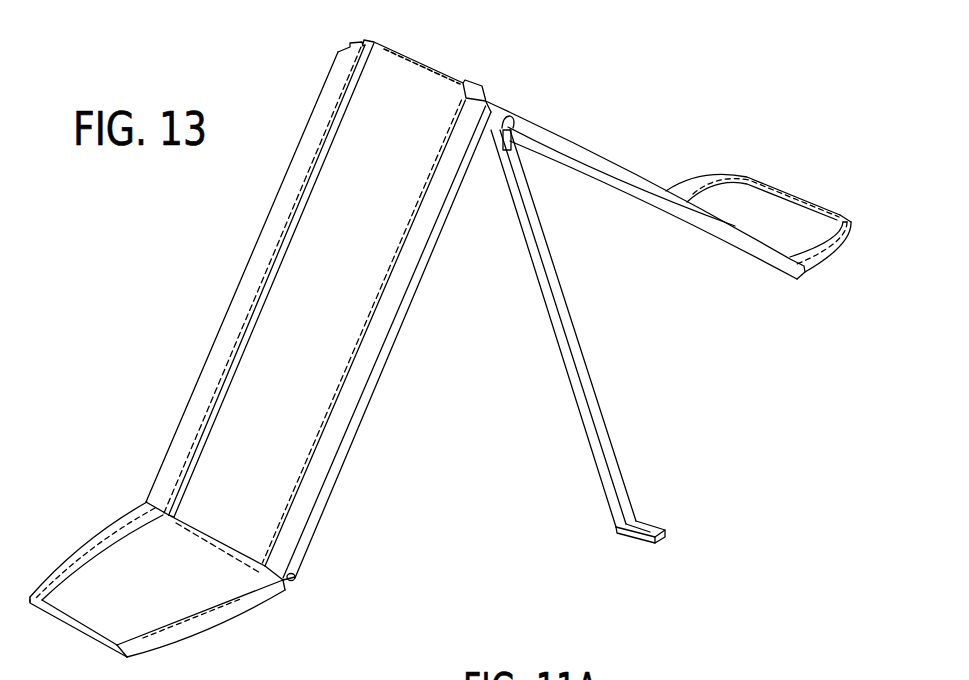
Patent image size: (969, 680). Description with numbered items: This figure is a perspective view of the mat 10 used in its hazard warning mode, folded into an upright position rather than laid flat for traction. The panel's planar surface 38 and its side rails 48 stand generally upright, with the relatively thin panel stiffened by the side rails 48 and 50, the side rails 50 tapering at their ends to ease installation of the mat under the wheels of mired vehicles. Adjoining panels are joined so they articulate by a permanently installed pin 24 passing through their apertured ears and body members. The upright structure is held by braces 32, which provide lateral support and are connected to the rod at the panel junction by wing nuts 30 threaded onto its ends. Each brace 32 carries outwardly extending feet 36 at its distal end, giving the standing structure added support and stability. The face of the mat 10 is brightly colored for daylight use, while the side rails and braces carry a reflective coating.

The mat 10 is at (196, 266).
The planar surface 38 is at (403, 77).
The wing nuts 30 is at (510, 116).
The braces 32 is at (555, 297).
The feet 36 is at (648, 530).
The side rails 48 is at (360, 388).
The pin 24 is at (298, 580).
The side rails 50 is at (823, 247).